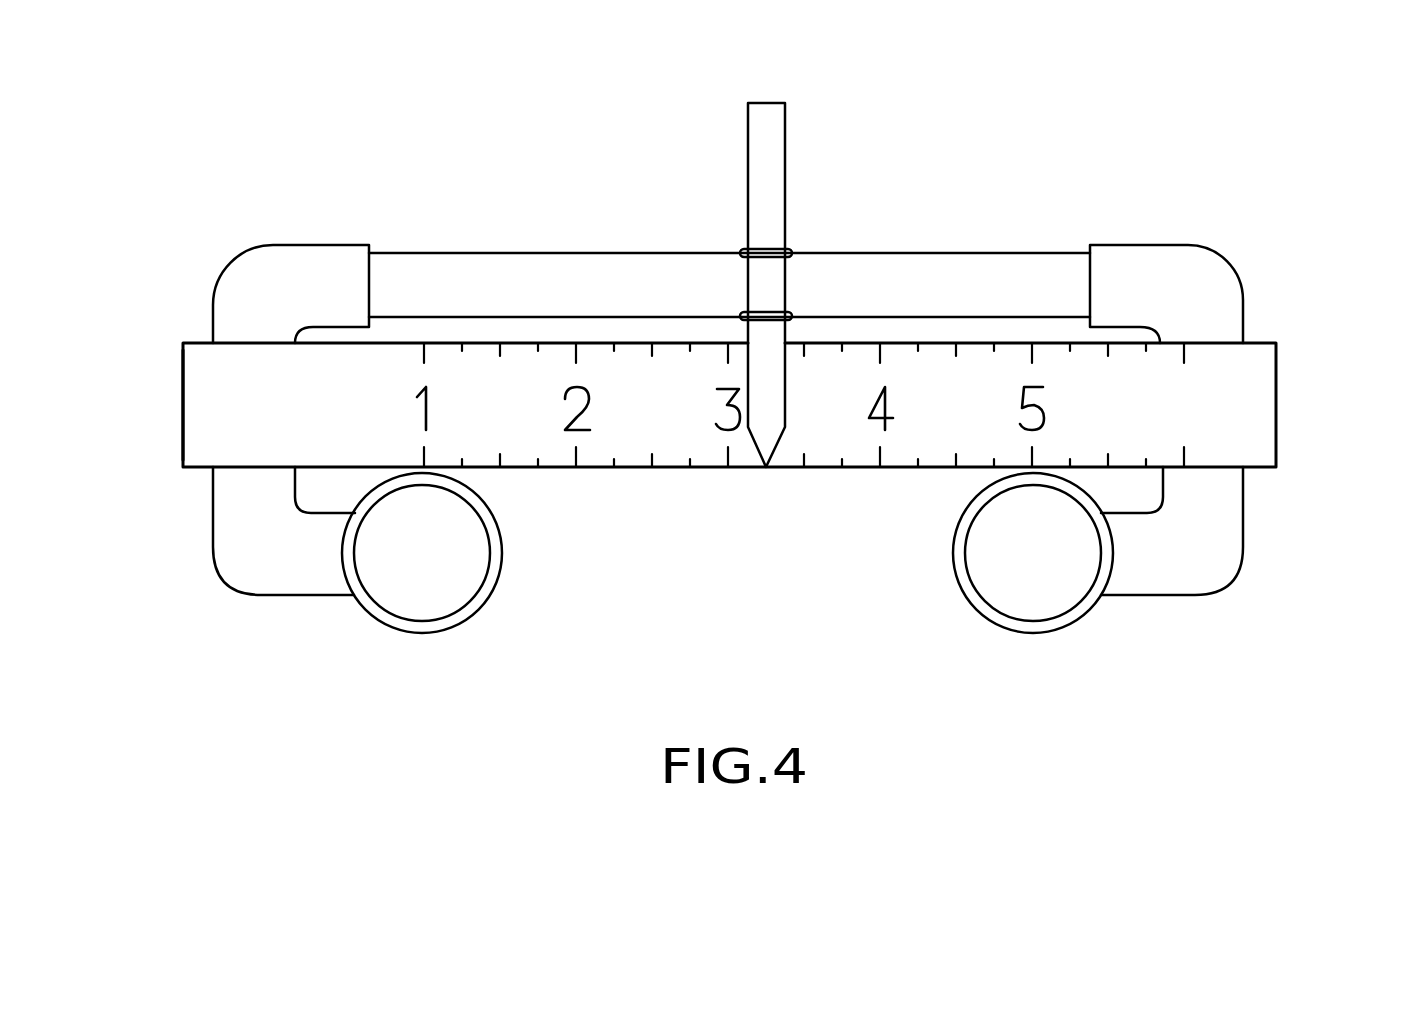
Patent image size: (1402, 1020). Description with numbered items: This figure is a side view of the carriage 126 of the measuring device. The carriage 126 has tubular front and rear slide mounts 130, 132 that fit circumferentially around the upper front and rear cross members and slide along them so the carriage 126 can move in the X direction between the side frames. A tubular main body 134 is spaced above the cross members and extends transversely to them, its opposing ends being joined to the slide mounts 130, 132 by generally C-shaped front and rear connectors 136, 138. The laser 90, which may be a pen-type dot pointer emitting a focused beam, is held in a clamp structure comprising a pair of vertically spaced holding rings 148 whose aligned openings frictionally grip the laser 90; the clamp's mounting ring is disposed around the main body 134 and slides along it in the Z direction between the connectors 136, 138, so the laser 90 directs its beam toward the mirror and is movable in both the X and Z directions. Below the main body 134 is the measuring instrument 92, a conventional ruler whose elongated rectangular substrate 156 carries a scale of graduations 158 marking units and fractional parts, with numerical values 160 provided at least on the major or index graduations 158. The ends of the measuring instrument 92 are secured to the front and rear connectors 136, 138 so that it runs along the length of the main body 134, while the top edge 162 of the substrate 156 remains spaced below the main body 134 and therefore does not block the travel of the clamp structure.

The laser 90 is at (773, 143).
The measuring instrument 92 is at (1214, 393).
The carriage 126 is at (736, 241).
The front slide mount 130 is at (410, 633).
The rear slide mount 132 is at (1047, 633).
The main body 134 is at (878, 267).
The front connector 136 is at (237, 505).
The rear connector 138 is at (1222, 500).
The holding rings 148 is at (742, 316).
The substrate 156 is at (225, 407).
The graduations 158 is at (463, 353).
The numerical values 160 is at (462, 420).
The top edge 162 is at (358, 343).